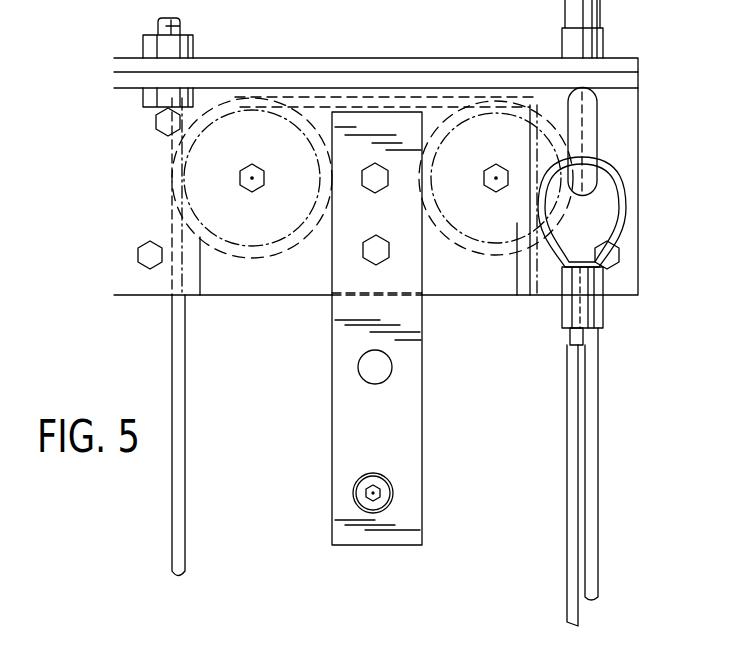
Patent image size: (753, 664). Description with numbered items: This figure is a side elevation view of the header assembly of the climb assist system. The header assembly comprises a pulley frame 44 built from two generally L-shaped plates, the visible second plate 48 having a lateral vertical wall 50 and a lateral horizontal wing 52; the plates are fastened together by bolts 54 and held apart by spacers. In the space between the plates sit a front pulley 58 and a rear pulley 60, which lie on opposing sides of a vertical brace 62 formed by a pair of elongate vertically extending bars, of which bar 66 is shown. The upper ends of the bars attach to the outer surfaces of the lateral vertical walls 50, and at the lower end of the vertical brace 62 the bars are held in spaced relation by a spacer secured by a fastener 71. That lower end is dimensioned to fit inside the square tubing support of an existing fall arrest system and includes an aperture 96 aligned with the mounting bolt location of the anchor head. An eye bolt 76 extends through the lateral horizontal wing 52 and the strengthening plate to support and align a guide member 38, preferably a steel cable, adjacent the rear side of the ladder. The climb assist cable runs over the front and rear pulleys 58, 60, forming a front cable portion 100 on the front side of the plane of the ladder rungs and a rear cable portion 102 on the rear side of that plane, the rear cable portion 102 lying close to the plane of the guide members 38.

The guide member 38 is at (599, 410).
The pulley frame 44 is at (103, 176).
The second L-shaped plate 48 is at (292, 276).
The lateral vertical wall 50 is at (221, 277).
The lateral horizontal wing 52 is at (115, 82).
The bolt 54 is at (154, 122).
The front pulley 58 is at (312, 110).
The rear pulley 60 is at (445, 100).
The vertical brace 62 is at (434, 344).
The vertically extending bar 66 is at (403, 430).
The fastener 71 is at (381, 493).
The eye bolt 76 is at (597, 130).
The aperture 96 is at (392, 371).
The front cable portion 100 is at (185, 531).
The rear cable portion 102 is at (567, 583).